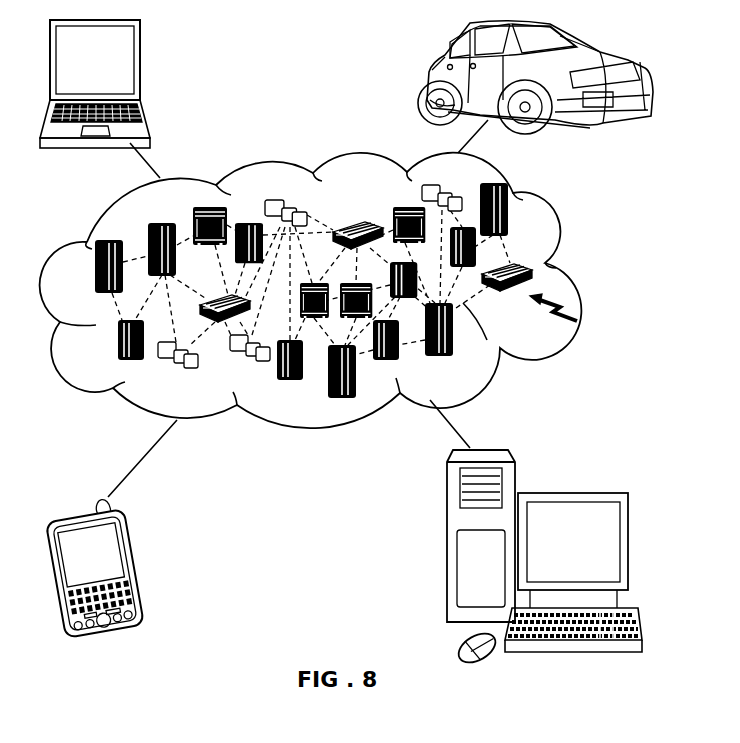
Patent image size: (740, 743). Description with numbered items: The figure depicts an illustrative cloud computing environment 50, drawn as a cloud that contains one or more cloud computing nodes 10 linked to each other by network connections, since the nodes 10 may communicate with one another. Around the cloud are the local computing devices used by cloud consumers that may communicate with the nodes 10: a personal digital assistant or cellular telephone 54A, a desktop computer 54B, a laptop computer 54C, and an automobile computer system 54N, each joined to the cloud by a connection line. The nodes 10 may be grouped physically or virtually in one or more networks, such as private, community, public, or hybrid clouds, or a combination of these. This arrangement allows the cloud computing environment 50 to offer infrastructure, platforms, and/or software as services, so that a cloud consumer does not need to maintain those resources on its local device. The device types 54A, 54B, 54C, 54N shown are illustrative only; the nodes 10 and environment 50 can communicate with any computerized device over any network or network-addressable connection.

The cloud computing node 10 is at (563, 310).
The cloud computing environment 50 is at (572, 273).
The personal digital assistant or cellular telephone 54A is at (133, 565).
The desktop computer 54B is at (570, 492).
The laptop computer 54C is at (143, 67).
The automobile computer system 54N is at (428, 82).